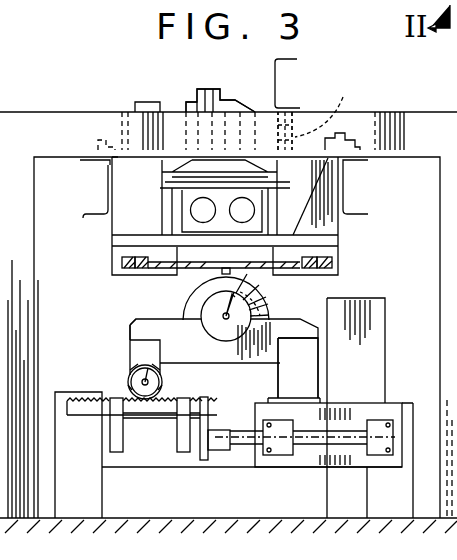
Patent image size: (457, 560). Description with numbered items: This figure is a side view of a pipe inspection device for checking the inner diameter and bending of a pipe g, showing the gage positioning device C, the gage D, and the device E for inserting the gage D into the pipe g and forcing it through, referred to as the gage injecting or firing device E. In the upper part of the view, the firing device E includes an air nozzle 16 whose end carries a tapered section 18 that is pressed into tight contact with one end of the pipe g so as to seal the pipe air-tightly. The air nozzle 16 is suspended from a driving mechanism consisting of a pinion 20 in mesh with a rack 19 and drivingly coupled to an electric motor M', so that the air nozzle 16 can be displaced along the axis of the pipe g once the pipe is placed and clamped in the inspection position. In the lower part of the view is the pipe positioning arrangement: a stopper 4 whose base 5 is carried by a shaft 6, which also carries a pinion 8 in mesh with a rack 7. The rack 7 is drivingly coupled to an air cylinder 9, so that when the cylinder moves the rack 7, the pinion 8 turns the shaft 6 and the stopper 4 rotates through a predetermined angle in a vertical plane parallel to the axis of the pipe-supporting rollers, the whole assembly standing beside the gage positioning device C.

The electric motor M' is at (220, 87).
The rack 19 is at (290, 118).
The pinion 20 is at (327, 107).
The tapered section 18 is at (195, 290).
The pipe g is at (260, 285).
The air nozzle 16 is at (270, 298).
The gage injecting or firing device E is at (190, 305).
The gage D is at (214, 328).
The base 5 is at (132, 328).
The stopper 4 is at (308, 330).
The gage positioning device C is at (375, 335).
The shaft 6 is at (130, 376).
The pinion 8 is at (163, 379).
The rack 7 is at (84, 410).
The air cylinder 9 is at (350, 430).